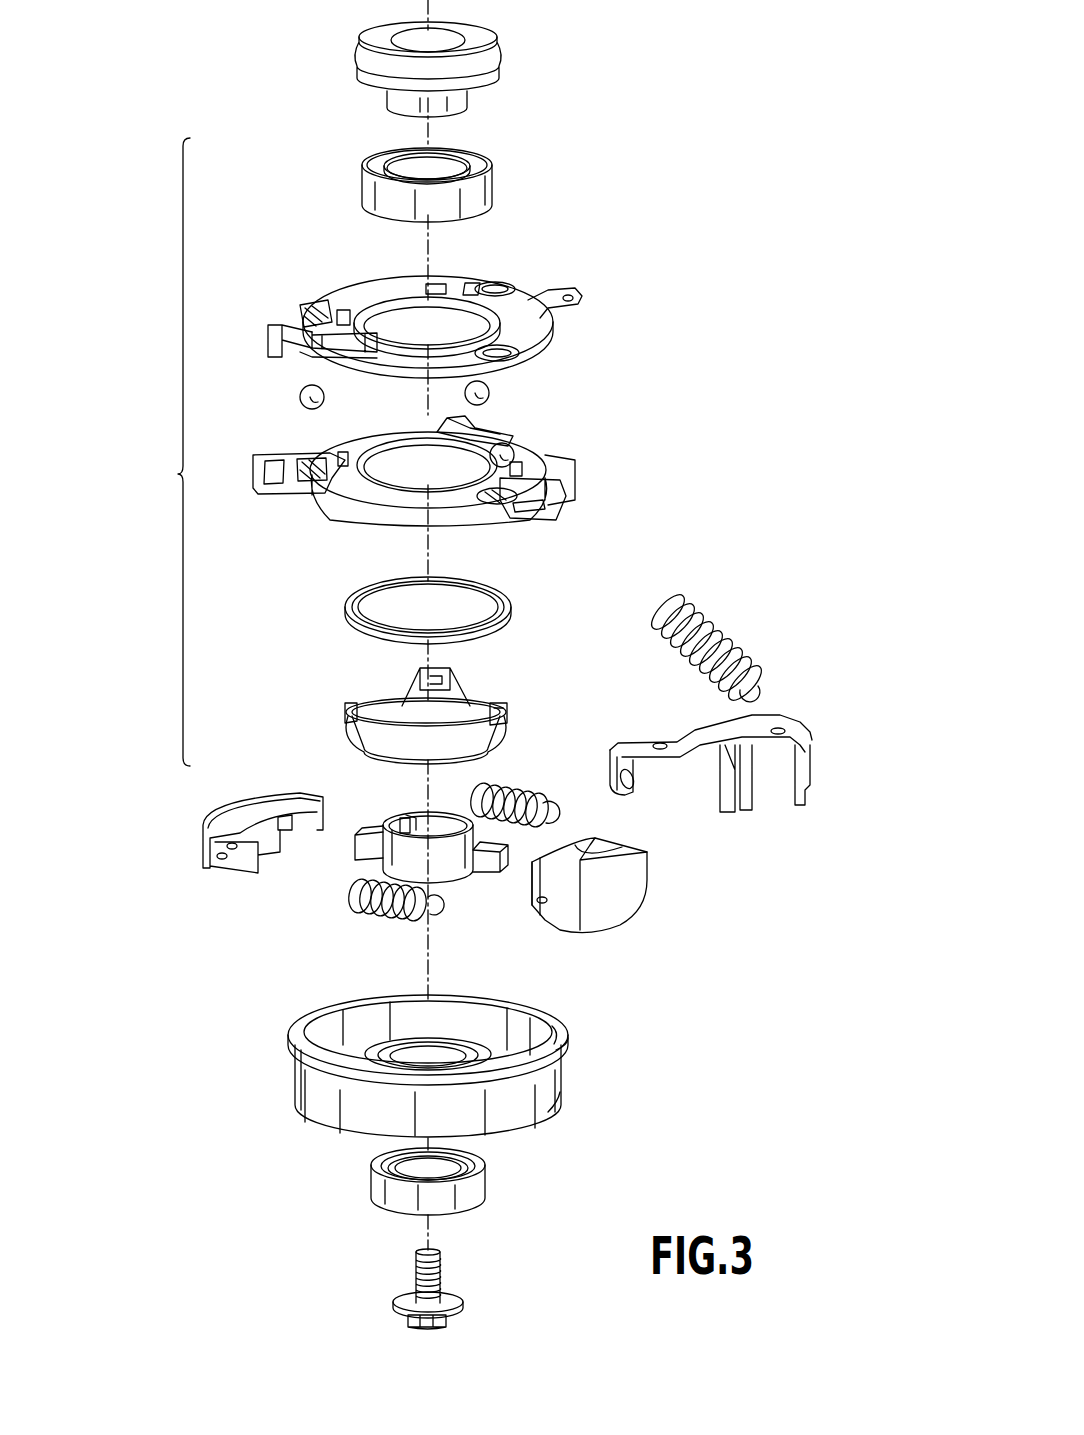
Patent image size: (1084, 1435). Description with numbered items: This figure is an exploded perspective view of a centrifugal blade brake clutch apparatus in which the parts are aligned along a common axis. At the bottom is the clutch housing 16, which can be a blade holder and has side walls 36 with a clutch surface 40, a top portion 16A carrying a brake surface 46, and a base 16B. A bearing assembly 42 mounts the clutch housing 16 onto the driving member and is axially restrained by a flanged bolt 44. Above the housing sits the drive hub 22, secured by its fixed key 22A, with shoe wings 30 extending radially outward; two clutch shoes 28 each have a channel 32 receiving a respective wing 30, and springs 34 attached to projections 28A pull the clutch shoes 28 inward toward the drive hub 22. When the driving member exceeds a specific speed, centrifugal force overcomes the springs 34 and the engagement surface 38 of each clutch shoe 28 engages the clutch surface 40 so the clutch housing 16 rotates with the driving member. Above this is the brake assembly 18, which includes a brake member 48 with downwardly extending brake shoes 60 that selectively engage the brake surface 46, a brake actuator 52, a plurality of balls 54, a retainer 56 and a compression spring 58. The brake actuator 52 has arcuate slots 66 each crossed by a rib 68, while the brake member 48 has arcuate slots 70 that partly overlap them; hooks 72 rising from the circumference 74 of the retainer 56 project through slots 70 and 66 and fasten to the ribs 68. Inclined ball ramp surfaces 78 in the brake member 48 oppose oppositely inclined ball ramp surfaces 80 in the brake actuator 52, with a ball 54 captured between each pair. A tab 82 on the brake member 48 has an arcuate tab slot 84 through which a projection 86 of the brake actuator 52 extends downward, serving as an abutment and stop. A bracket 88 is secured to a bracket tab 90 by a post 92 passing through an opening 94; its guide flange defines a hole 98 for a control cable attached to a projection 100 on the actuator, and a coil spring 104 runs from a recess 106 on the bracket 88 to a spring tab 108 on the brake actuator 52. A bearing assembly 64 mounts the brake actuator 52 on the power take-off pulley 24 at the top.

The clutch housing 16 is at (419, 1066).
The top portion 16A is at (562, 1050).
The base 16B is at (550, 1112).
The brake assembly 18 is at (392, 450).
The drive hub 22 is at (409, 870).
The fixed key 22A is at (405, 825).
The power take-off pulley 24 is at (494, 32).
The clutch shoe 28 is at (425, 832).
The projection 28A is at (222, 860).
The shoe wing 30 is at (362, 850).
The channel 32 is at (286, 832).
The bias element 34 is at (530, 790).
The side walls 36 is at (335, 1040).
The engagement surface 38 is at (203, 835).
The clutch surface 40 is at (375, 1015).
The bearing assembly 42 is at (478, 1196).
The flanged bolt 44 is at (455, 1300).
The brake surface 46 is at (562, 1030).
The brake member 48 is at (421, 491).
The brake actuator 52 is at (425, 293).
The balls 54 is at (300, 397).
The retainer 56 is at (441, 702).
The compression spring 58 is at (345, 610).
The brake shoe 60 is at (421, 480).
The bearing assembly 64 is at (492, 168).
The arcuate slot 66 is at (436, 286).
The rib 68 is at (470, 287).
The arcuate slot 70 is at (343, 455).
The hook 72 is at (510, 718).
The circumference 74 is at (460, 700).
The ball ramp surface 78 is at (305, 465).
The ball ramp surface 80 is at (300, 305).
The tab 82 is at (258, 494).
The tab slot 84 is at (270, 468).
The projection 86 is at (268, 340).
The bracket 88 is at (722, 793).
The bracket tab 90 is at (552, 520).
The post 92 is at (742, 812).
The opening 94 is at (545, 508).
The hole 98 is at (634, 782).
The projection 100 is at (330, 330).
The coil spring 104 is at (720, 625).
The recess 106 is at (808, 795).
The spring tab 108 is at (580, 296).